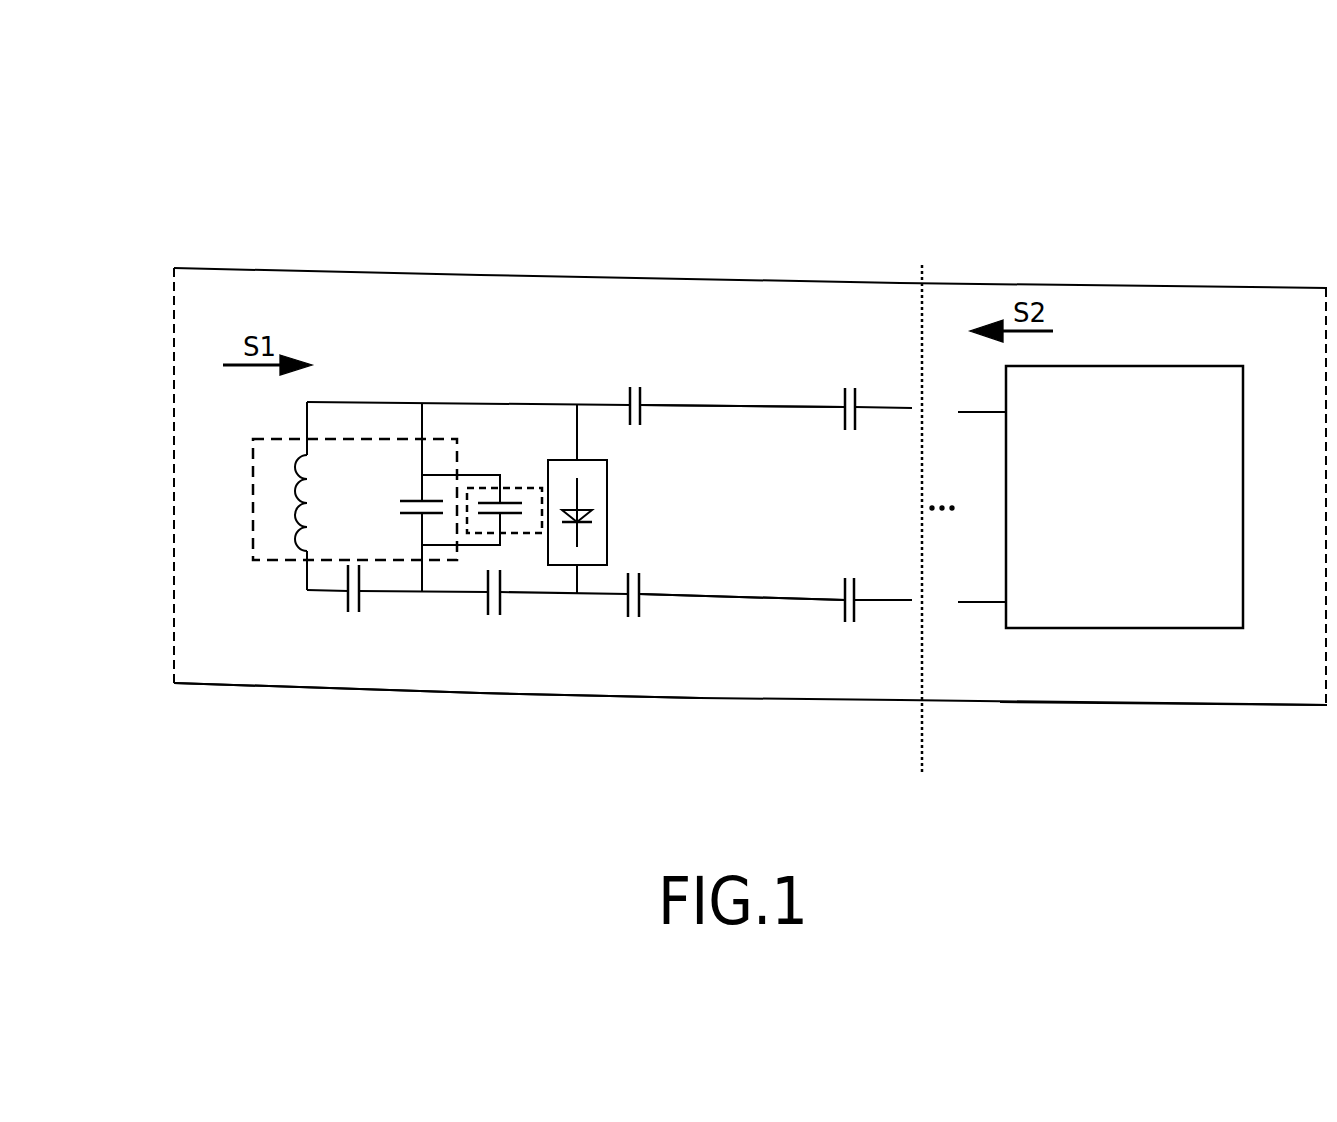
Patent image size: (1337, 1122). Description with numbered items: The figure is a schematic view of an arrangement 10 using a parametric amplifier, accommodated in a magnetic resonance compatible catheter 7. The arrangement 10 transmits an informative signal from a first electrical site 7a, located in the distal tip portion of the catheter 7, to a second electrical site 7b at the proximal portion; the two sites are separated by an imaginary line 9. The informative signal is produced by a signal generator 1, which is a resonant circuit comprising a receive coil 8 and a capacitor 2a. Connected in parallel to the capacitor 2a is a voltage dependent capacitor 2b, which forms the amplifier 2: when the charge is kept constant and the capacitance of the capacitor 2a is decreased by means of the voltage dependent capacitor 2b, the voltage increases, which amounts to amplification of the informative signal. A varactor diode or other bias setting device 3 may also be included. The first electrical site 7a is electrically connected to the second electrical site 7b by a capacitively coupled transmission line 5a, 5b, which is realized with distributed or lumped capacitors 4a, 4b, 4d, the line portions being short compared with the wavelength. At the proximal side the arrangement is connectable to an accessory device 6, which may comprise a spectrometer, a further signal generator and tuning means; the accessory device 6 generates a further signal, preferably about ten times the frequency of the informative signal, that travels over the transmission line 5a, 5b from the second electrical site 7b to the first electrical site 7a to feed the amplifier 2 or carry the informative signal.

The arrangement 10 is at (113, 125).
The catheter 7 is at (170, 568).
The first electrical site 7a is at (607, 688).
The second electrical site 7b is at (1130, 705).
The imaginary line 9 is at (920, 718).
The signal generator 1 is at (253, 465).
The receive coil 8 is at (303, 502).
The capacitor 2a is at (417, 520).
The amplifier 2 is at (492, 478).
The voltage dependent capacitor 2b is at (508, 502).
The bias setting device 3 is at (565, 565).
The capacitor 4a is at (640, 418).
The capacitor 4b is at (653, 588).
The capacitor 4d is at (843, 593).
The capacitively coupled transmission line 5a is at (903, 408).
The capacitively coupled transmission line 5b is at (943, 610).
The accessory device 6 is at (1097, 367).